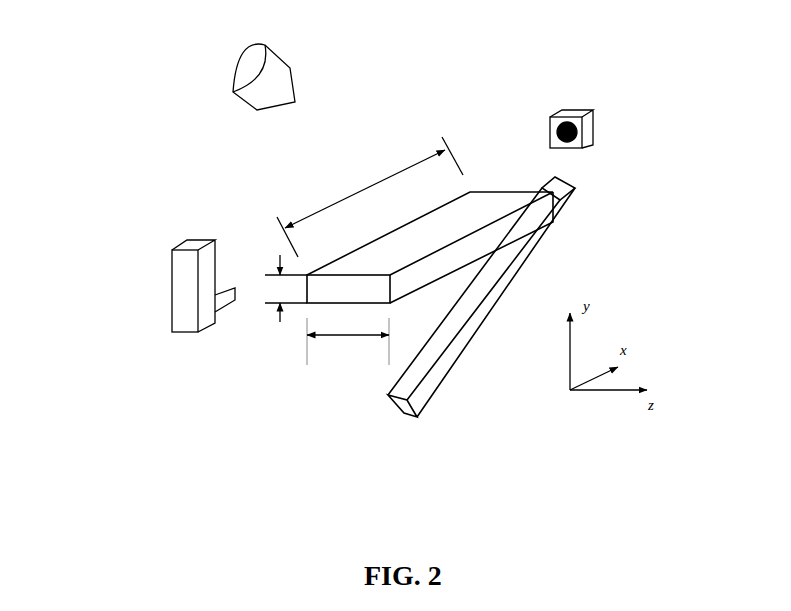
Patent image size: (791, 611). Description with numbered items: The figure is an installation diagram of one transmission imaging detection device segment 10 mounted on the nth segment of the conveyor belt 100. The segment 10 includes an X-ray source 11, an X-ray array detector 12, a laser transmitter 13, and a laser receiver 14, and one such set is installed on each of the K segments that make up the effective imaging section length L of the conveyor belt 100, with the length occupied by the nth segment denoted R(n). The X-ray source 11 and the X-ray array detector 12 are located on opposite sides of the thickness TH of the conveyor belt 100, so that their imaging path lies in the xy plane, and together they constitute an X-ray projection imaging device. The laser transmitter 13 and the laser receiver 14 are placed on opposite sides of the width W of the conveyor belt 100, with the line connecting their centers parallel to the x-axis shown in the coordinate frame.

The transmission imaging detection device segment 10 is at (600, 43).
The X-ray source 11 is at (253, 80).
The X-ray array detector 12 is at (525, 273).
The laser transmitter 13 is at (178, 273).
The laser receiver 14 is at (550, 128).
The conveyor belt 100 is at (493, 207).